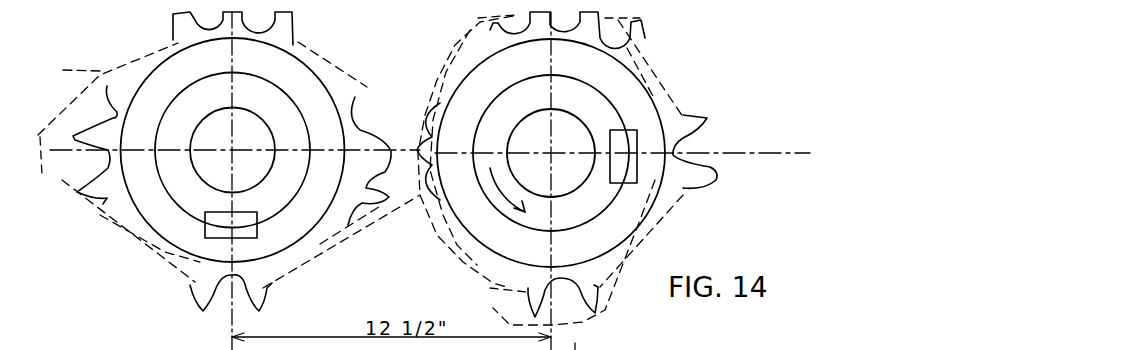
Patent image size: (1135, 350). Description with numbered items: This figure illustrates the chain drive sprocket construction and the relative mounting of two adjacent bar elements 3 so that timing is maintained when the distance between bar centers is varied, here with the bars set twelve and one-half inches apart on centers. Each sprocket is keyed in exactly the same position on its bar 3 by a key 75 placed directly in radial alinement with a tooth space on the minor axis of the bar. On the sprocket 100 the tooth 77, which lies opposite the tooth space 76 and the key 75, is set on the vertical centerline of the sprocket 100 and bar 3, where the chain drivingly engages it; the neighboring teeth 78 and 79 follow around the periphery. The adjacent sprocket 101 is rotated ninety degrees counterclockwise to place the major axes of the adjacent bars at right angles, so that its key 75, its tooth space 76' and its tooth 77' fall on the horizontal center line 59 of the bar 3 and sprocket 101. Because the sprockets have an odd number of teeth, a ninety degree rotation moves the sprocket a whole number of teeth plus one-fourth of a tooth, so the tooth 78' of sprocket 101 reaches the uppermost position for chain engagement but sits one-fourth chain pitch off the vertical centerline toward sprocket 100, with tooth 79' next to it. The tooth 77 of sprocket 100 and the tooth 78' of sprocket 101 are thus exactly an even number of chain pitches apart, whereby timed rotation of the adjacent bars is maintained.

The bar element 3 is at (172, 123).
The tooth 77 is at (202, 73).
The tooth 77' is at (454, 152).
The tooth 78 is at (370, 133).
The tooth 78' is at (589, 38).
The tooth 79 is at (120, 184).
The tooth 79' is at (521, 298).
The sprocket 100 is at (160, 212).
The adjacent sprocket 101 is at (493, 233).
The key 75 is at (683, 162).
The tooth space 76 is at (284, 272).
The tooth space 76' is at (736, 151).
The center line 59 is at (790, 155).